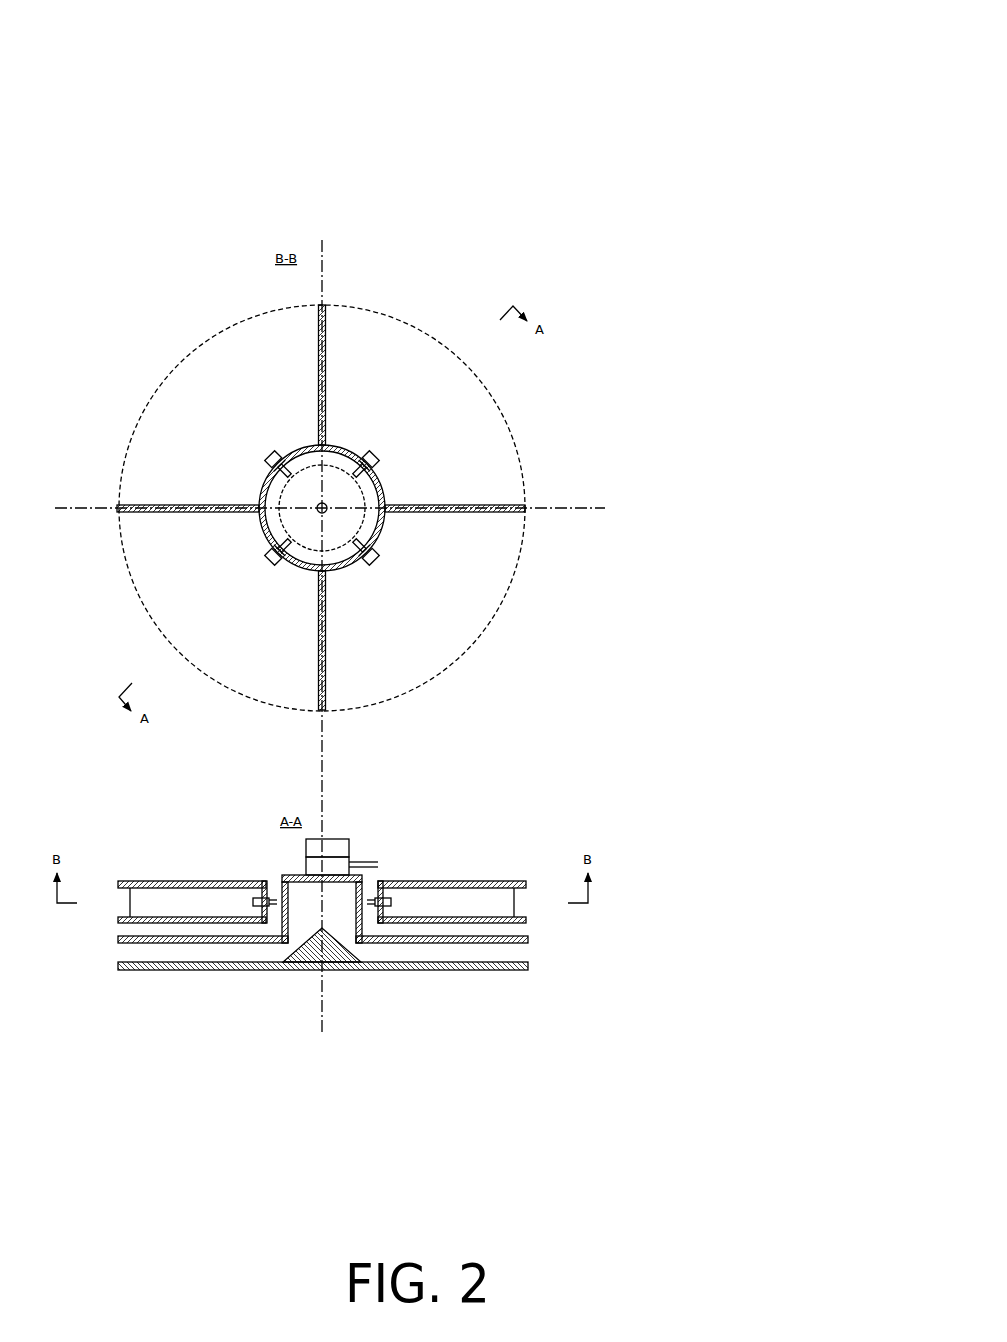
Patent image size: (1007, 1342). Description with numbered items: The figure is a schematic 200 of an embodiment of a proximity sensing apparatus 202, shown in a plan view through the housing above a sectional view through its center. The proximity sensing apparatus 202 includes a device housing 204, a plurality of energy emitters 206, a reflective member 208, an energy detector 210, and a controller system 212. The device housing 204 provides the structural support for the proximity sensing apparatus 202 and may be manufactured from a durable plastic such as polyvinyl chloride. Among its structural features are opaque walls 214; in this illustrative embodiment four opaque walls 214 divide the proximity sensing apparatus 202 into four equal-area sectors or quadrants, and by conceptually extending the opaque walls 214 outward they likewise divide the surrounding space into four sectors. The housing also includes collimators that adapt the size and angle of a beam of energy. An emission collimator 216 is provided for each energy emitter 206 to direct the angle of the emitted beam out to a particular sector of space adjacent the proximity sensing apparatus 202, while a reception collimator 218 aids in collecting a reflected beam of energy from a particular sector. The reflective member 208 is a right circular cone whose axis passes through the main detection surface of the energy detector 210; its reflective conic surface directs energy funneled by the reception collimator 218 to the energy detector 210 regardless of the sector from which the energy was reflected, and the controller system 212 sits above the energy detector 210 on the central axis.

The schematic 200 is at (765, 43).
The proximity sensing apparatus 202 is at (499, 258).
The device housing 204 is at (352, 304).
The energy emitters 206 is at (371, 550).
The reflective member 208 is at (340, 948).
The energy detector 210 is at (337, 865).
The controller system 212 is at (337, 845).
The opaque walls 214 is at (328, 652).
The emission collimator 216 is at (480, 883).
The reception collimator 218 is at (478, 942).